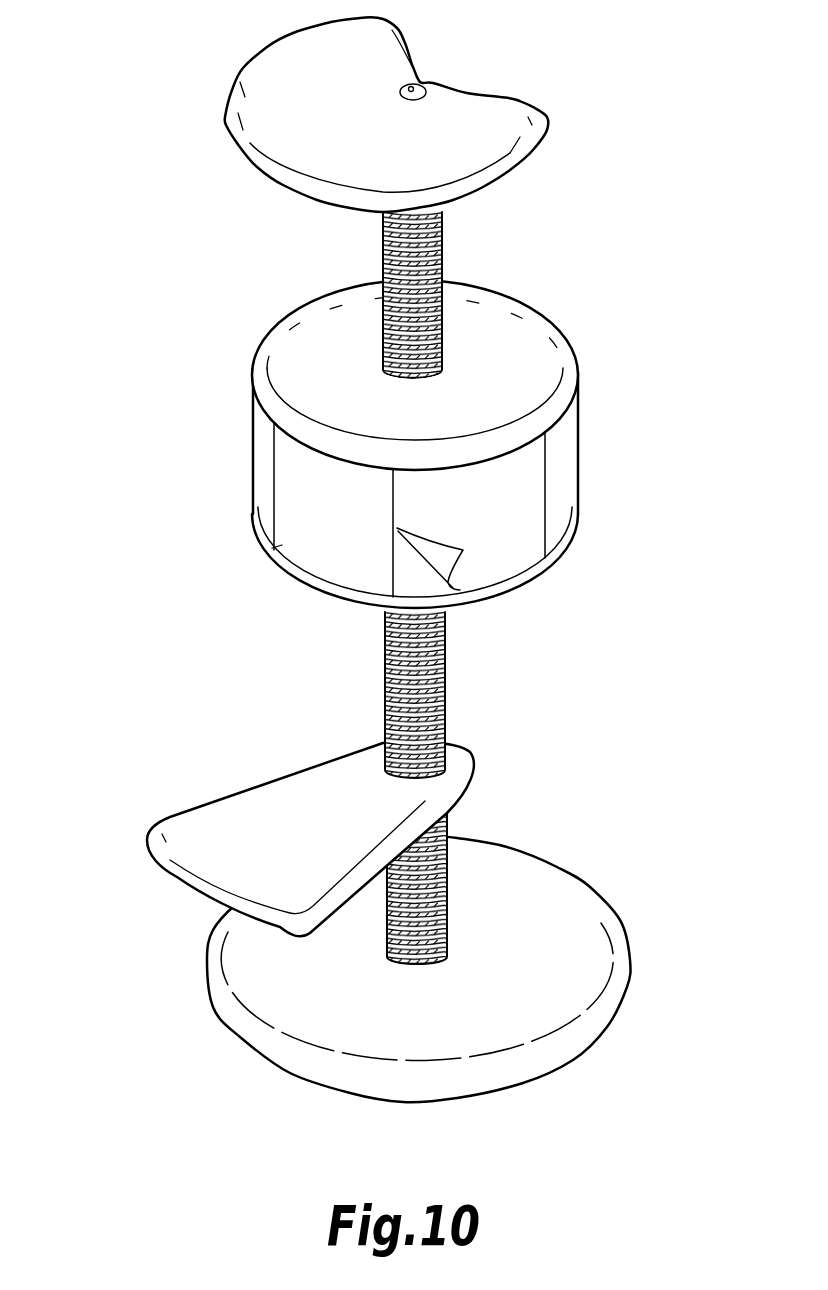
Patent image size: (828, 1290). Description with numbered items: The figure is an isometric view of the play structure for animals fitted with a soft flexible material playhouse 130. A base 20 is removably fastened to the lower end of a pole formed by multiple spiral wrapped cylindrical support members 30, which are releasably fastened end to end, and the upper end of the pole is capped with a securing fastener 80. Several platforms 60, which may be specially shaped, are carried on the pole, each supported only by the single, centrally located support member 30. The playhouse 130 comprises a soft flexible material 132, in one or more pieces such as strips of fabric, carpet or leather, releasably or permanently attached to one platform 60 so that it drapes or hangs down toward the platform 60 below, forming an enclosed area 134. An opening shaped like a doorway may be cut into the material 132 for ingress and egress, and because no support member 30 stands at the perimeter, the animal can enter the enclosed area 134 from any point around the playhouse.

The base 20 is at (583, 891).
The multiple spiral wrapped cylindrical support member 30 is at (447, 829).
The platform 60 is at (198, 816).
The securing fastener 80 is at (418, 85).
The playhouse 130 is at (480, 462).
The soft flexible material 132 is at (462, 510).
The enclosed area 134 is at (421, 560).